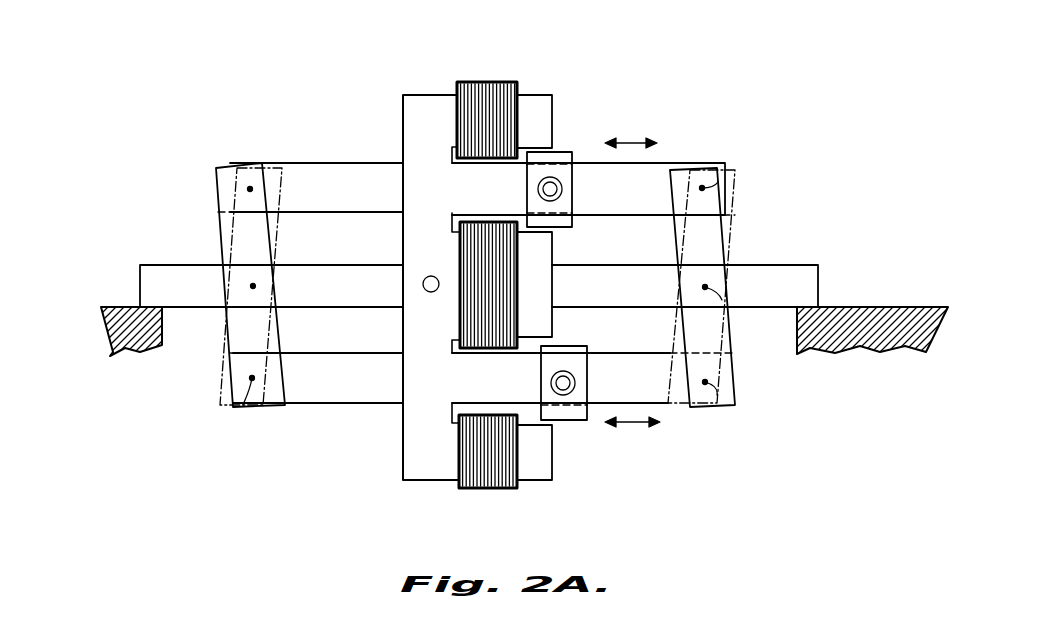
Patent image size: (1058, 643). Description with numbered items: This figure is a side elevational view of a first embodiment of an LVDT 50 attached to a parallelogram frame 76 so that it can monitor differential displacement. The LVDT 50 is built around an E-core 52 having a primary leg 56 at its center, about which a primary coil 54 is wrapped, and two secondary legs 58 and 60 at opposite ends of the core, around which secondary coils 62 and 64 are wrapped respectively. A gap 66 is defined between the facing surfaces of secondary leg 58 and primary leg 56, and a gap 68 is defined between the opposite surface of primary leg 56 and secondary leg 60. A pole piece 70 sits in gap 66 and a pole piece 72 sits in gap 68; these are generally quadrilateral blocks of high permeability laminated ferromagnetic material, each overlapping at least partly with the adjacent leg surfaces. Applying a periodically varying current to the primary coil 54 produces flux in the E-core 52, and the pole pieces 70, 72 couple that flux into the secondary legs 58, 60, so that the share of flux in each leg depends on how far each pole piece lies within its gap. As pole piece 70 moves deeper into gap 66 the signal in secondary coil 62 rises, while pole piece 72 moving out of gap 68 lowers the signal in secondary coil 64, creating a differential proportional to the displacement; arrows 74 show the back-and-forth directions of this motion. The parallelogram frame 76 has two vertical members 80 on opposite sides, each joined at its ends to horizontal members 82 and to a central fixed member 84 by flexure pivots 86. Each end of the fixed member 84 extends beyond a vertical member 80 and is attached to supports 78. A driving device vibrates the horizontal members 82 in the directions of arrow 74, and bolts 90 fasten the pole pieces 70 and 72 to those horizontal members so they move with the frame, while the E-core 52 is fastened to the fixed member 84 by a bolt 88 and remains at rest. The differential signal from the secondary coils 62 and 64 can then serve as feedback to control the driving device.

The LVDT 50 is at (377, 453).
The E-core 52 is at (405, 118).
The primary coil 54 is at (472, 319).
The primary leg 56 is at (538, 282).
The secondary leg 58 is at (532, 103).
The secondary leg 60 is at (540, 472).
The secondary coil 62 is at (484, 92).
The secondary coil 64 is at (492, 490).
The gap 66 is at (525, 150).
The gap 68 is at (526, 420).
The pole piece 70 is at (560, 164).
The pole piece 72 is at (573, 423).
The arrows 74 is at (633, 134).
The parallelogram frame 76 is at (803, 245).
The supports 78 is at (117, 306).
The vertical members 80 is at (232, 235).
The horizontal members 82 is at (656, 174).
The fixed member 84 is at (637, 274).
The flexure pivots 86 is at (250, 189).
The bolt 88 is at (426, 277).
The bolts 90 is at (556, 194).